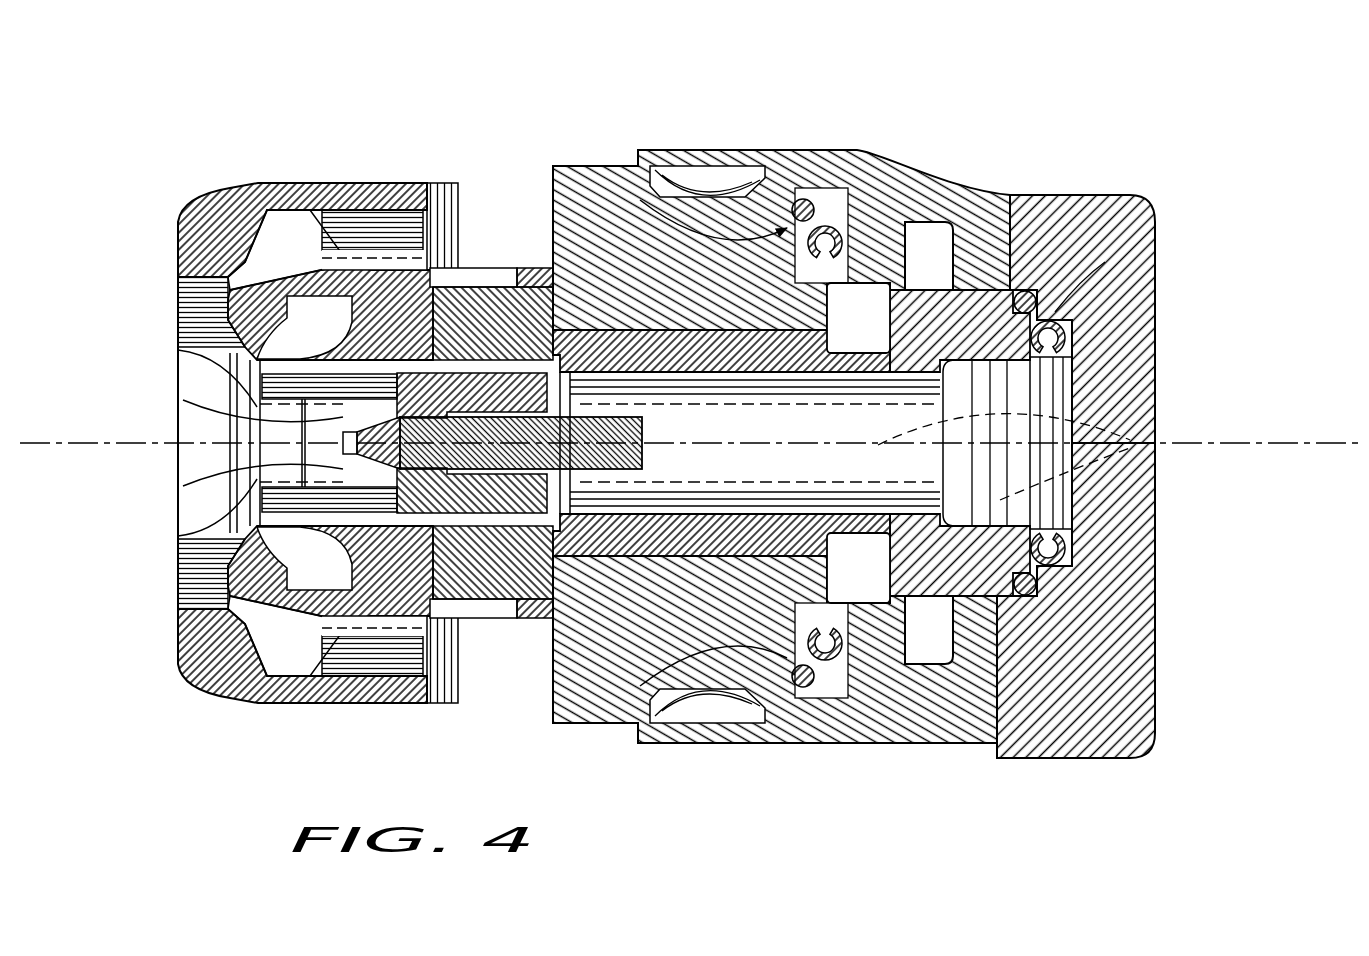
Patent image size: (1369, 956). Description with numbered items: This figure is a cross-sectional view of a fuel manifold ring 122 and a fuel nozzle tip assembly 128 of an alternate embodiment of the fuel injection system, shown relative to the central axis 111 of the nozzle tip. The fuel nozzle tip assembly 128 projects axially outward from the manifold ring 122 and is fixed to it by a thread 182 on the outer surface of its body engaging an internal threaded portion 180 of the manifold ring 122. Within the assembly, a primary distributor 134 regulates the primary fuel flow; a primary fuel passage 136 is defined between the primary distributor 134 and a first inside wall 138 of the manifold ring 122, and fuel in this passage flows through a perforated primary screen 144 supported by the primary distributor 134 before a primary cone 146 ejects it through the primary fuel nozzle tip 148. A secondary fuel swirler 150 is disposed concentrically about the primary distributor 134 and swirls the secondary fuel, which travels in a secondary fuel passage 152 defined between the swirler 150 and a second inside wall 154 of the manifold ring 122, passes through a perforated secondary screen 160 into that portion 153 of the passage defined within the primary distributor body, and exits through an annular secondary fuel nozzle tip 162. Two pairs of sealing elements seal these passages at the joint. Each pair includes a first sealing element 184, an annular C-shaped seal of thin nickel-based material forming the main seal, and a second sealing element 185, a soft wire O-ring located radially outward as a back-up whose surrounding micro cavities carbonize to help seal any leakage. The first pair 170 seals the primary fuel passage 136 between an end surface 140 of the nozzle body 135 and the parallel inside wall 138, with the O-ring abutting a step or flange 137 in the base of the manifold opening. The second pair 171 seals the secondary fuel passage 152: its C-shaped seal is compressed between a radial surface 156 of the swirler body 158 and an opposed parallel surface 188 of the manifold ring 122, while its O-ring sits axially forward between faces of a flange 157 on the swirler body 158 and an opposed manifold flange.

The central axis 111 is at (1130, 440).
The fuel manifold ring 122 is at (1105, 192).
The fuel nozzle tip assembly 128 is at (232, 190).
The primary distributor 134 is at (756, 427).
The nozzle body 135 is at (1000, 593).
The primary fuel passage 136 is at (995, 485).
The step or flange 137 is at (1050, 580).
The first inside wall 138 is at (1070, 512).
The end surface 140 is at (1020, 590).
The perforated primary screen 144 is at (1072, 452).
The primary cone 146 is at (350, 455).
The primary fuel nozzle tip 148 is at (355, 436).
The secondary fuel swirler 150 is at (322, 705).
The secondary fuel passage 152 is at (928, 235).
The portion of the secondary fuel passage 153 is at (853, 325).
The second inside wall 154 is at (957, 563).
The radial surface 156 is at (830, 612).
The flange 157 is at (810, 650).
The body of the secondary fuel swirler 158 is at (817, 597).
The perforated secondary screen 160 is at (860, 625).
The annular secondary fuel nozzle tip 162 is at (300, 400).
The first pair of sealing elements 170 is at (1105, 262).
The second pair of sealing elements 171 is at (580, 166).
The internal threaded portion 180 is at (742, 162).
The thread 182 is at (655, 192).
The first sealing element 184 is at (840, 222).
The second sealing element 185 is at (815, 192).
The surface of the manifold ring 188 is at (840, 700).